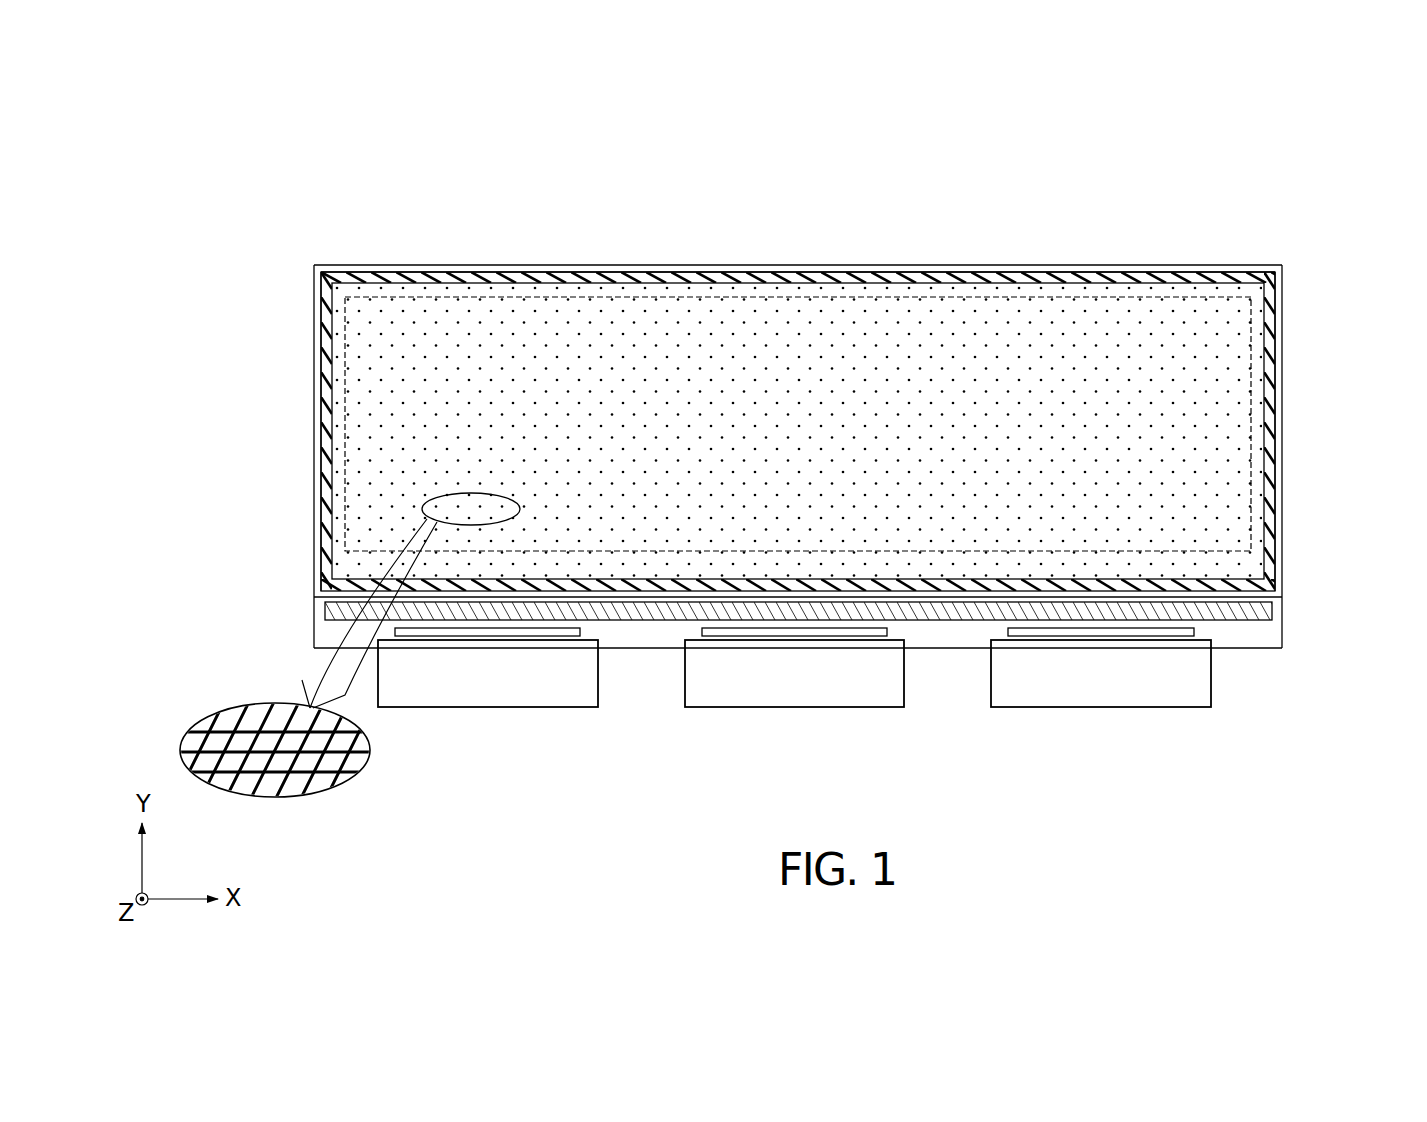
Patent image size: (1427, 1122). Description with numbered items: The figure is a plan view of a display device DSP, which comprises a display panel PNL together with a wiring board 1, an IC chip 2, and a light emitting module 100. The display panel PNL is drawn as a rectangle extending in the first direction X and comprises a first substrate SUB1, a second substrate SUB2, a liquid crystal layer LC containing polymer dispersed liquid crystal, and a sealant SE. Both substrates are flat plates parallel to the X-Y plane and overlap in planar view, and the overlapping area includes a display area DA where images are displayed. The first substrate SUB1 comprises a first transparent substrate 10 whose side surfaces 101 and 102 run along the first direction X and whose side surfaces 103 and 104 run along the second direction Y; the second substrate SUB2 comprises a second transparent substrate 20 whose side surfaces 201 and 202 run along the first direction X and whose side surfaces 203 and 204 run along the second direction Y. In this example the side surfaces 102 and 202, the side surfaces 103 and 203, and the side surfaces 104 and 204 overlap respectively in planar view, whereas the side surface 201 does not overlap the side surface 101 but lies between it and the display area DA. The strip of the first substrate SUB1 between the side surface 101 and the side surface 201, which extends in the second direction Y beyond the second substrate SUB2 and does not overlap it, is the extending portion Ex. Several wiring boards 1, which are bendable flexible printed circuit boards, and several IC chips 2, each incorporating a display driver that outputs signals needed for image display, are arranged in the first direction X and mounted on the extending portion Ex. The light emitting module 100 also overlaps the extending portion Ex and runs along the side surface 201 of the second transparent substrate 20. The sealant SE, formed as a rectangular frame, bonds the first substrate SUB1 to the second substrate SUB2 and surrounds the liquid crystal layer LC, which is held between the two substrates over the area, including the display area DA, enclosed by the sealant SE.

The wiring board 1 is at (462, 695).
The IC chip 2 is at (546, 636).
The first transparent substrate 10 is at (798, 687).
The second transparent substrate 20 is at (1283, 591).
The light emitting module 100 is at (617, 621).
The side surface 101 is at (925, 651).
The side surface 102 is at (798, 228).
The side surface 103 is at (246, 456).
The side surface 104 is at (1346, 456).
The side surface 201 is at (970, 600).
The side surface 202 is at (1084, 261).
The side surface 203 is at (311, 332).
The side surface 204 is at (1288, 324).
The display device DSP is at (772, 490).
The display panel PNL is at (756, 524).
The sealant SE is at (1278, 298).
The display area DA is at (1252, 373).
The liquid crystal layer LC is at (736, 571).
The first substrate SUB1 is at (794, 464).
The second substrate SUB2 is at (849, 529).
The extending portion Ex is at (798, 687).